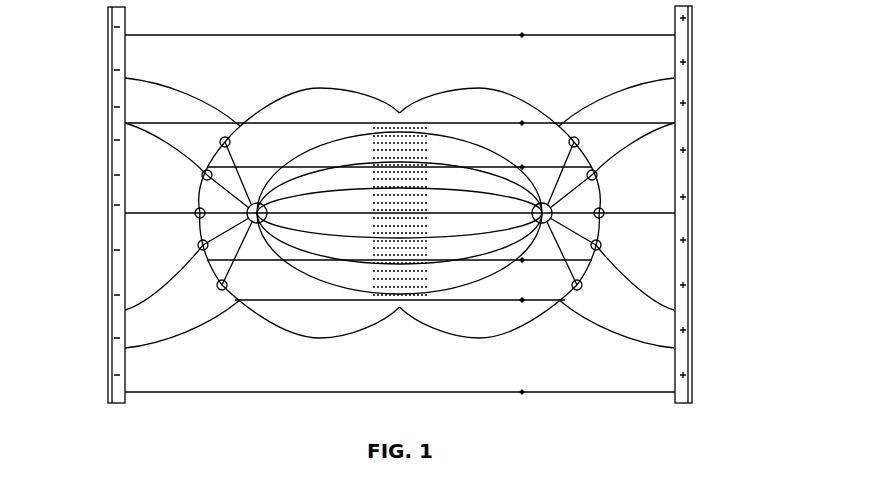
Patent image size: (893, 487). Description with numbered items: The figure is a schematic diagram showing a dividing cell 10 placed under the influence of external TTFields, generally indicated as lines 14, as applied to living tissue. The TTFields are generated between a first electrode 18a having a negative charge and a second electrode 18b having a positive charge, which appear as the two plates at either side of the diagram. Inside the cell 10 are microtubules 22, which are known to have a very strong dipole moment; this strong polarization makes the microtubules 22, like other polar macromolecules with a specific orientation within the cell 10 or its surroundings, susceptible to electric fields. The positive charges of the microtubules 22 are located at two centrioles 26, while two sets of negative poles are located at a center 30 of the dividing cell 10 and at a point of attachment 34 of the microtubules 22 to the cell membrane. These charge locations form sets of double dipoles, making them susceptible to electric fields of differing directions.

The dividing cell 10 is at (289, 82).
The lines 14 is at (614, 76).
The first electrode 18a is at (114, 408).
The second electrode 18b is at (688, 410).
The microtubules 22 is at (340, 270).
The centrioles 26 is at (243, 215).
The center 30 is at (402, 315).
The point of attachment 34 is at (199, 174).